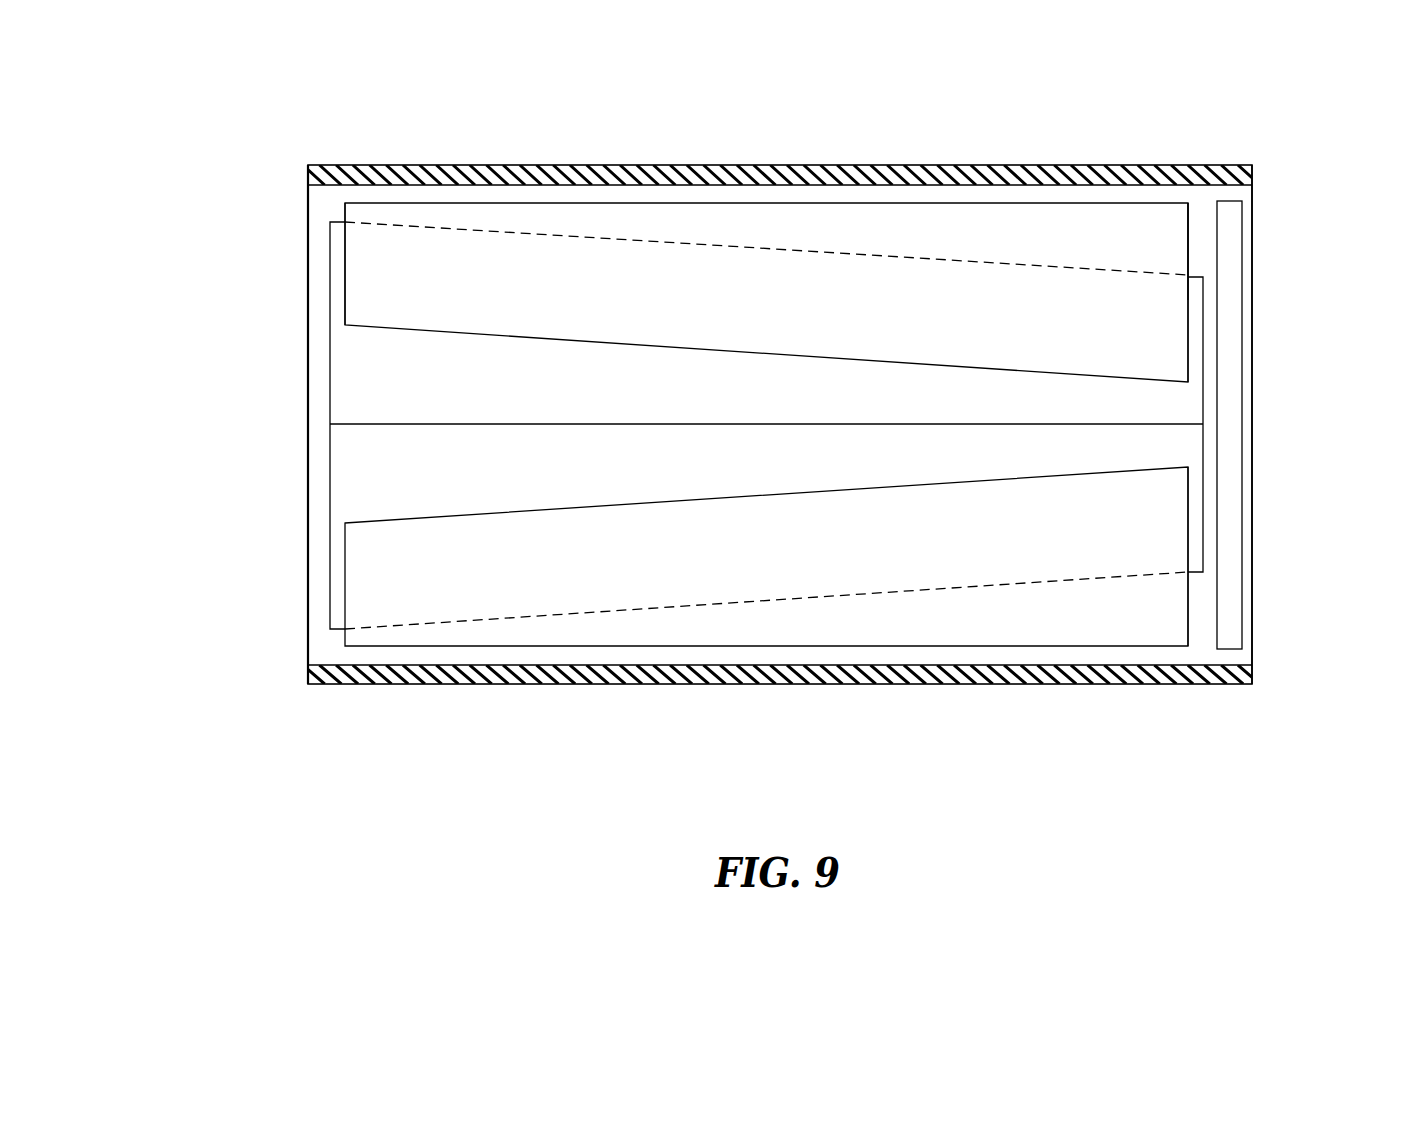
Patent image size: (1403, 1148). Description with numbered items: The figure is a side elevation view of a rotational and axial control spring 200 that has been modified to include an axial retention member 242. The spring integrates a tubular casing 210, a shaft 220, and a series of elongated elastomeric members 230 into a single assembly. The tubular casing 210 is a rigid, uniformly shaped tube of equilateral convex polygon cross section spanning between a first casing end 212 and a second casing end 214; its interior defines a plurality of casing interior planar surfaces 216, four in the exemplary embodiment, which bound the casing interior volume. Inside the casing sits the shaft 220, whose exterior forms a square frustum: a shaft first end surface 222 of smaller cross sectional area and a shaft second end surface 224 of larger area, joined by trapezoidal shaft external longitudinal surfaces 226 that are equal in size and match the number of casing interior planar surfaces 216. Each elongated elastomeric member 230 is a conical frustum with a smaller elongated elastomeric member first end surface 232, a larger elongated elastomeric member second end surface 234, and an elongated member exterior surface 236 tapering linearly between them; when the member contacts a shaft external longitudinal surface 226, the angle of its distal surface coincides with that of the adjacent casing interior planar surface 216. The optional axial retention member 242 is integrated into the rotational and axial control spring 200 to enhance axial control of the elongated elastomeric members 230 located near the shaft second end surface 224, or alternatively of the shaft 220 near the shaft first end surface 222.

The rotational and axial control spring 200 is at (302, 150).
The tubular casing 210 is at (773, 168).
The first casing end 212 is at (308, 345).
The second casing end 214 is at (1253, 425).
The casing interior planar surface 216 is at (657, 186).
The shaft 220 is at (385, 399).
The shaft first end surface 222 is at (329, 518).
The shaft second end surface 224 is at (1204, 490).
The shaft external longitudinal surface 226 is at (405, 478).
The elongated elastomeric member 230 is at (1140, 240).
The elongated elastomeric member first end surface 232 is at (344, 265).
The elongated elastomeric member second end surface 234 is at (1190, 255).
The elongated member exterior surface 236 is at (1046, 230).
The axial retention member 242 is at (1225, 342).